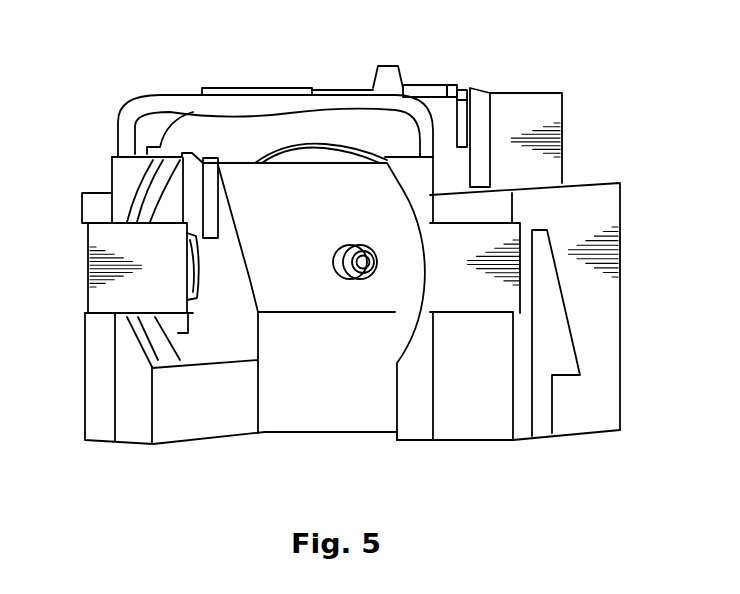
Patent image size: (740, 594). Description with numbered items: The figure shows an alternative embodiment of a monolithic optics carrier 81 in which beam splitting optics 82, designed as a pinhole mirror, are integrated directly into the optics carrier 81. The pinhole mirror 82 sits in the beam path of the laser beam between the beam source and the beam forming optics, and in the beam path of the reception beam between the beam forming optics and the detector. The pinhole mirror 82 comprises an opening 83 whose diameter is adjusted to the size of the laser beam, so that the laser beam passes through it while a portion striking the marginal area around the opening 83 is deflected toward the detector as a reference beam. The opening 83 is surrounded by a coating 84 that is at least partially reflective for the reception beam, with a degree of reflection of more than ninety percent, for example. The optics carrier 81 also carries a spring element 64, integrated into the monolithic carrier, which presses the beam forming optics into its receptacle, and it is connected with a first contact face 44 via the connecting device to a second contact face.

The first contact face 44 is at (138, 447).
The spring element 64 is at (275, 107).
The monolithic optics carrier 81 is at (588, 139).
The beam splitting optics 82 is at (353, 302).
The opening 83 is at (365, 262).
The coating 84 is at (270, 236).